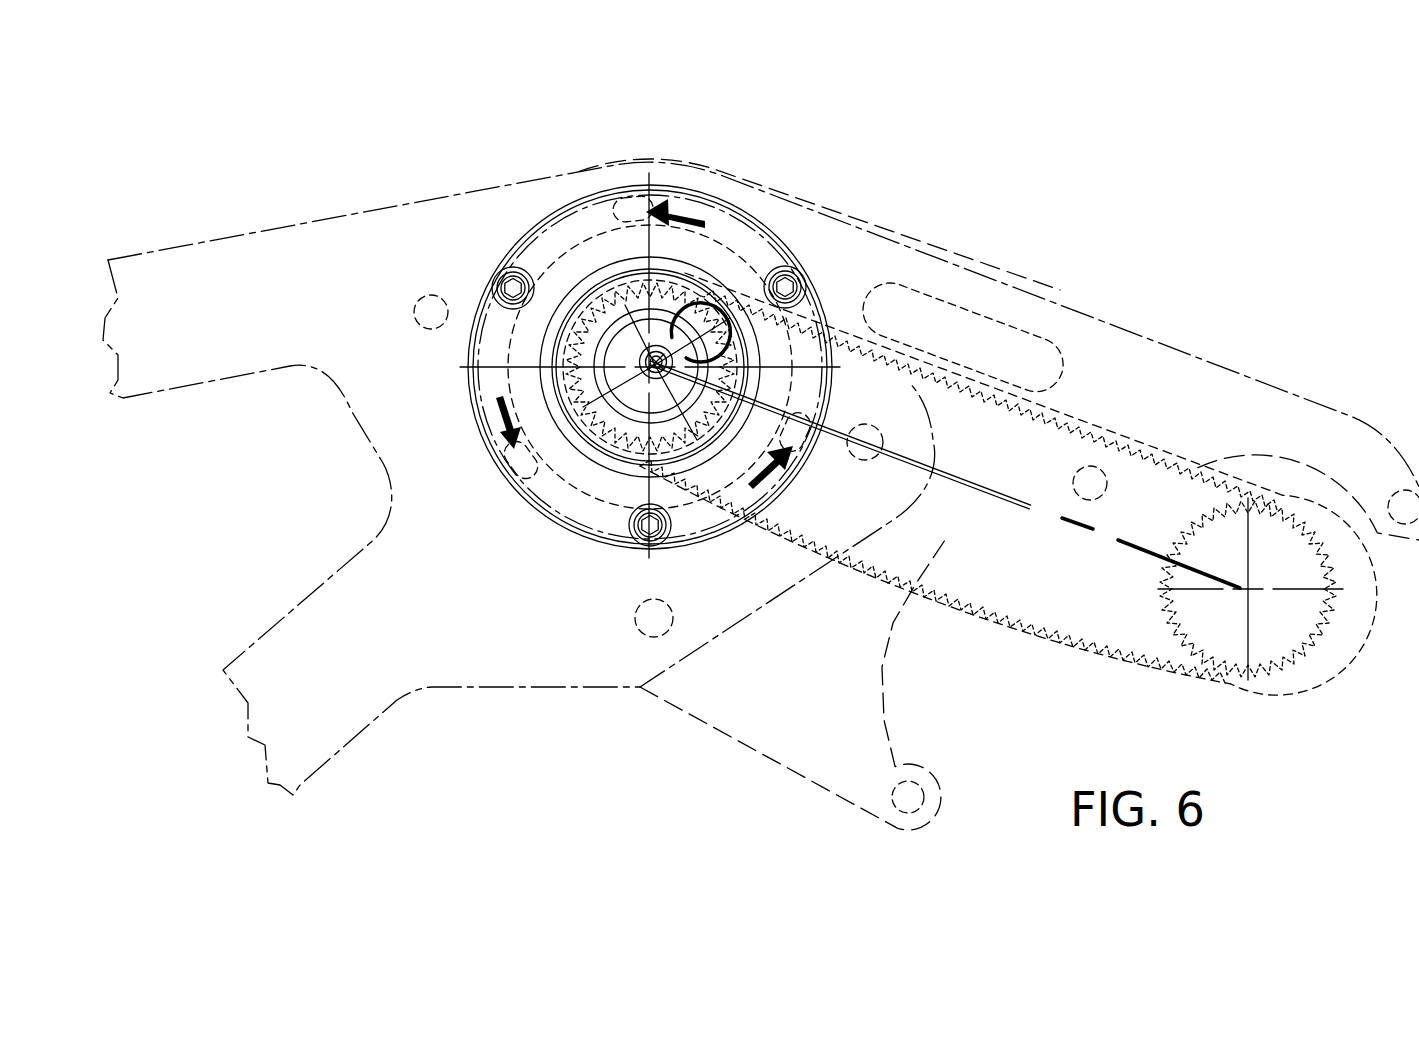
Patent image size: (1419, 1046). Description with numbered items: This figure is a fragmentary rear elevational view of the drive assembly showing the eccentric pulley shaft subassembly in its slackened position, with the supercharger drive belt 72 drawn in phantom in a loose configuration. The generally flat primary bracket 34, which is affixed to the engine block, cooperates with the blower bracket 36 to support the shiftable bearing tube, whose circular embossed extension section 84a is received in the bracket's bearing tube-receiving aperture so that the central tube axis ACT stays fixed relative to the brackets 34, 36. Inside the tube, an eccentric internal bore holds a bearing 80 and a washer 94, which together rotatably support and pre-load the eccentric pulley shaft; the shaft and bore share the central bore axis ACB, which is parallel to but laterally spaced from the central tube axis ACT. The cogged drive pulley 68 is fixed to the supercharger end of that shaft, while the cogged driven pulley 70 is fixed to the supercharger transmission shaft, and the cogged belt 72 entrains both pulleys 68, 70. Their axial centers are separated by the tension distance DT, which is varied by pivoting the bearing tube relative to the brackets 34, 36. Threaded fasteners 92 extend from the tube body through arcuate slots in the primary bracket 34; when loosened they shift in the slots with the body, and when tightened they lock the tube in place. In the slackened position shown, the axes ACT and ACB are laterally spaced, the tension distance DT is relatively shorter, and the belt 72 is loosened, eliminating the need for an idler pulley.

The primary bracket 34 is at (272, 265).
The blower bracket 36 is at (1040, 322).
The drive pulley 68 is at (560, 323).
The driven pulley 70 is at (1322, 645).
The belt 72 is at (1080, 668).
The bearing 80 is at (613, 290).
The embossed extension section 84a is at (577, 432).
The threaded fasteners 92 is at (497, 273).
The washer 94 is at (640, 335).
The central bore axis ACB is at (656, 362).
The central tube axis ACT is at (656, 362).
The tension distance DT is at (1072, 522).